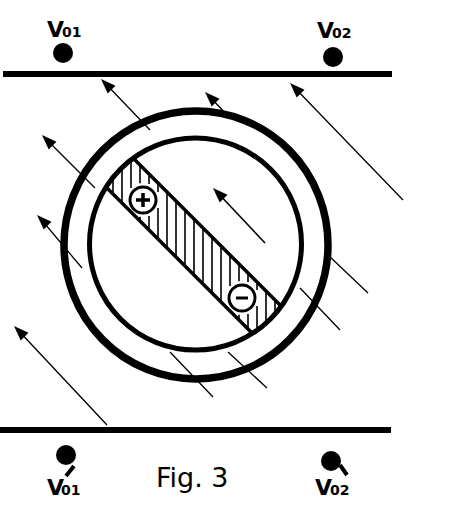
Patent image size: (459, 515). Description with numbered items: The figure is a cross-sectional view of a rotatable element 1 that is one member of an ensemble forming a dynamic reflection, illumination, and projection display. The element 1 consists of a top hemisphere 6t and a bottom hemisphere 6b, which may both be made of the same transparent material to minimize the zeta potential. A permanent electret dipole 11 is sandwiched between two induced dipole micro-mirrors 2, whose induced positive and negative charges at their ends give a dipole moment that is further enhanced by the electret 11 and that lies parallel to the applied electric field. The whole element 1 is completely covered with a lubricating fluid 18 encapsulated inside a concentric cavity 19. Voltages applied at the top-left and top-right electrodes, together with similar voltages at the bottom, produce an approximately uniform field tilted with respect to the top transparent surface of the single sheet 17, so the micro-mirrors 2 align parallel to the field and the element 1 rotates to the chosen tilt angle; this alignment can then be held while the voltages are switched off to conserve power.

The rotatable element 1 is at (133, 307).
The induced dipole micro-mirror 2 is at (198, 187).
The top hemisphere 6t is at (298, 198).
The bottom hemisphere 6b is at (133, 326).
The electret dipole 11 is at (198, 280).
The sheet 17 is at (203, 87).
The lubricating fluid 18 is at (315, 266).
The concentric cavity 19 is at (331, 232).